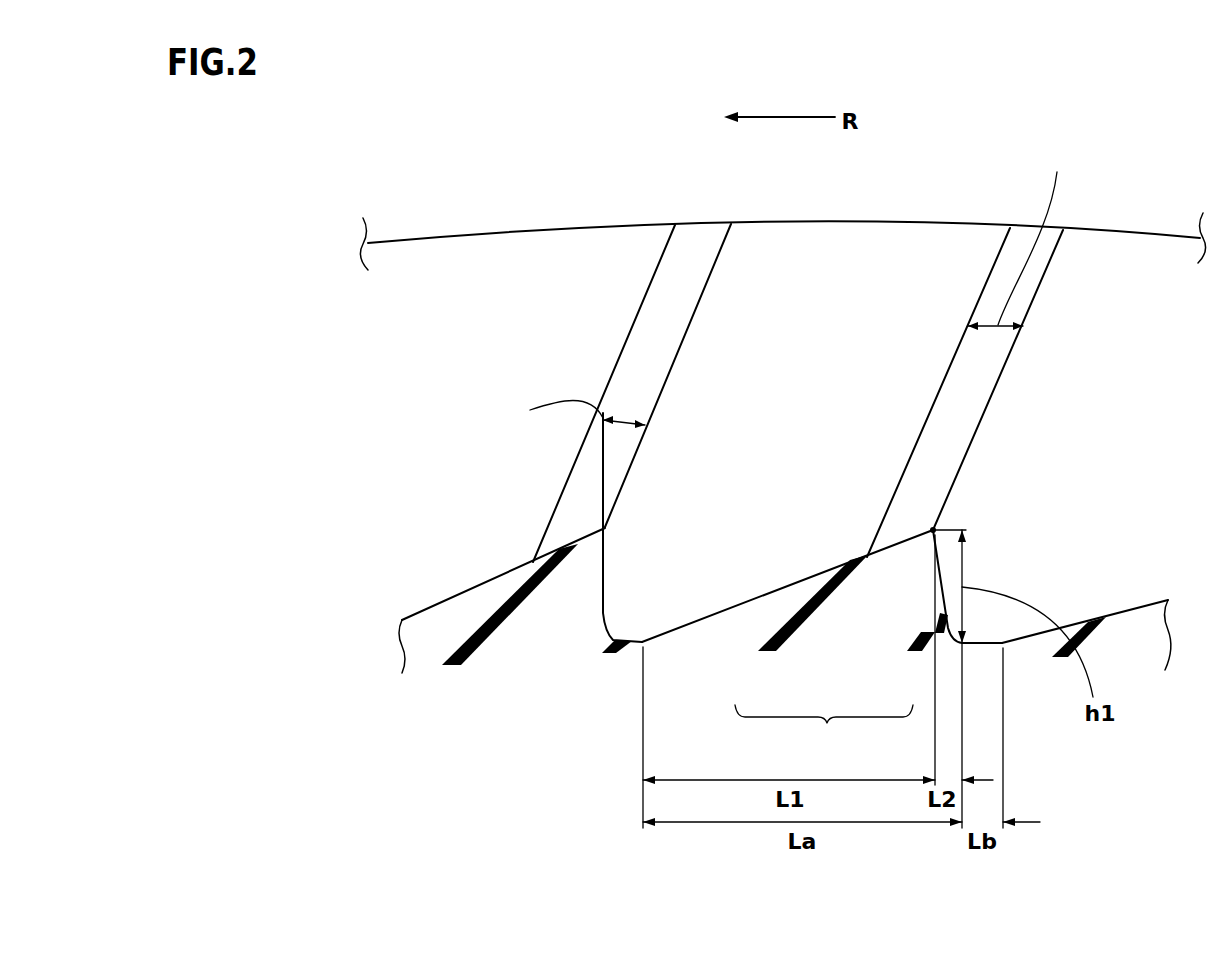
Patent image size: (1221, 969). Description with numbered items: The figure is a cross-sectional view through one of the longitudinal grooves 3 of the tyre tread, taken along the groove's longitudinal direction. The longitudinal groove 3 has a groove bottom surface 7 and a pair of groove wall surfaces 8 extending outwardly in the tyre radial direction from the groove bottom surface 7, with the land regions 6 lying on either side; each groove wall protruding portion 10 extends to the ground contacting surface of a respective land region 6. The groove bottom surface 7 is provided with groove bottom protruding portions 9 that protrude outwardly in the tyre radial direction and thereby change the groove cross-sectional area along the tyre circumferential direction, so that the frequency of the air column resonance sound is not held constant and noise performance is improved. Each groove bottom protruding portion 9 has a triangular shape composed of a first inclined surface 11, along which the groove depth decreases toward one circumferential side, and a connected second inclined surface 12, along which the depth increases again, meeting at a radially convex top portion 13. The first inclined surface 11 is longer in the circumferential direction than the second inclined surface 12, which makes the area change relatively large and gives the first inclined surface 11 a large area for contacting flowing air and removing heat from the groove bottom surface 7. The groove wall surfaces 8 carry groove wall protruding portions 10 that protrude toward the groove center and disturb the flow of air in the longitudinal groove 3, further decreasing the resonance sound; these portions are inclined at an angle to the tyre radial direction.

The longitudinal groove 3 is at (448, 298).
The land region 6 is at (1133, 230).
The groove bottom surface 7 is at (983, 643).
The groove wall surface 8 is at (825, 281).
The groove bottom protruding portion 9 is at (490, 582).
The groove wall protruding portion 10 is at (672, 293).
The first inclined surface 11 is at (789, 584).
The second inclined surface 12 is at (940, 573).
The top portion 13 is at (936, 533).